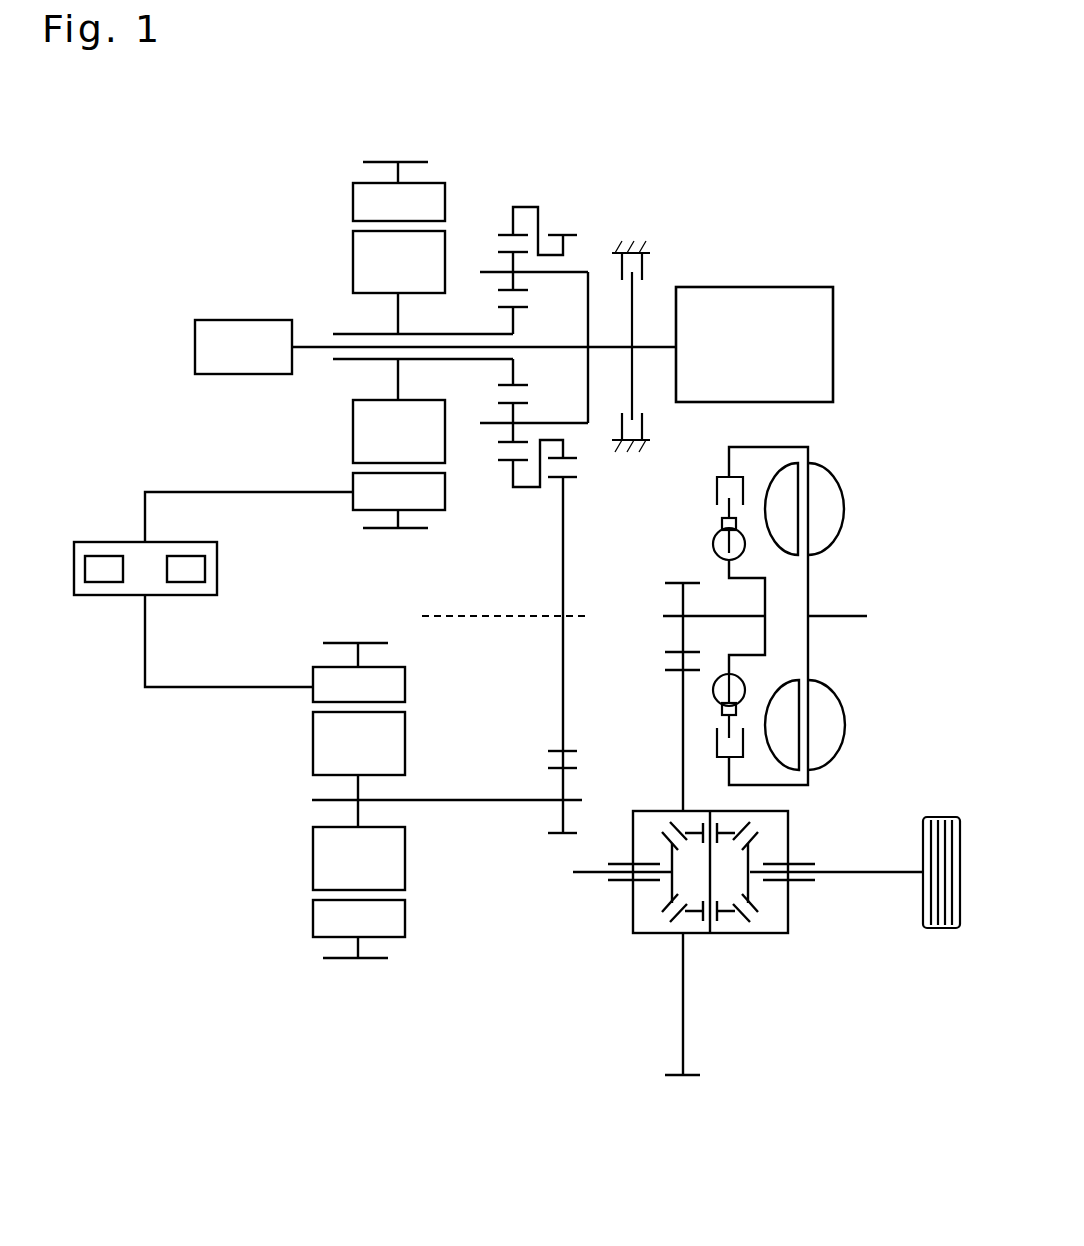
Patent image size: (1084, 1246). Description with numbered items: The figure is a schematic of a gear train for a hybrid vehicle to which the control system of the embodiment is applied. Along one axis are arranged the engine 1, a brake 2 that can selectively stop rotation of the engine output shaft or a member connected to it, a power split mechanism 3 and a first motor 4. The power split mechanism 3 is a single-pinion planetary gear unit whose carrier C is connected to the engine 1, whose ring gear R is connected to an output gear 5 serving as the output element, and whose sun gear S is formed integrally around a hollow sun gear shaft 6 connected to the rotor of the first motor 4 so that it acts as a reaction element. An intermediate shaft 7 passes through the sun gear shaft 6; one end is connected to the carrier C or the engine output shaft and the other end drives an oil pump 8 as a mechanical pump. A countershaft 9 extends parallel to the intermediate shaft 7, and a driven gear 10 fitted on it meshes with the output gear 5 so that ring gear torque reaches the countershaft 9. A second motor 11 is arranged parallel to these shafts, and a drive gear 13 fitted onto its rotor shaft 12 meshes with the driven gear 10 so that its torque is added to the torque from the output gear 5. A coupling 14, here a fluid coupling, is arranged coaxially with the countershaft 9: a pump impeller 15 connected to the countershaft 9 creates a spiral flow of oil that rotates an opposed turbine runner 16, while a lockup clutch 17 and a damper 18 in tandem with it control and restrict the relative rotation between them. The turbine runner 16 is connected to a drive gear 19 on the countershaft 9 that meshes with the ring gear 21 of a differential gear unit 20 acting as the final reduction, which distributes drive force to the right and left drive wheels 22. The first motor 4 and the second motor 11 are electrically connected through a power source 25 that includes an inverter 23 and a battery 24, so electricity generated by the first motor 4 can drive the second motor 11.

The engine 1 is at (771, 287).
The brake 2 is at (651, 270).
The power split mechanism 3 is at (579, 178).
The first motor 4 is at (353, 265).
The output gear 5 is at (568, 234).
The sun gear shaft 6 is at (345, 361).
The intermediate shaft 7 is at (318, 346).
The oil pump 8 is at (240, 320).
The countershaft 9 is at (487, 612).
The driven gear 10 is at (574, 482).
The second motor 11 is at (313, 750).
The rotor shaft 12 is at (479, 801).
The drive gear 13 is at (565, 836).
The coupling 14 is at (865, 448).
The pump impeller 15 is at (846, 507).
The turbine runner 16 is at (779, 459).
The lockup clutch 17 is at (716, 490).
The damper 18 is at (713, 545).
The drive gear 19 is at (665, 582).
The differential gear unit 20 is at (790, 927).
The ring gear 21 is at (672, 672).
The drive wheels 22 is at (941, 816).
The inverter 23 is at (110, 556).
The battery 24 is at (206, 570).
The controller 25 is at (218, 548).
The ring gear R is at (507, 232).
The carrier C is at (492, 270).
The sun gear S is at (528, 310).